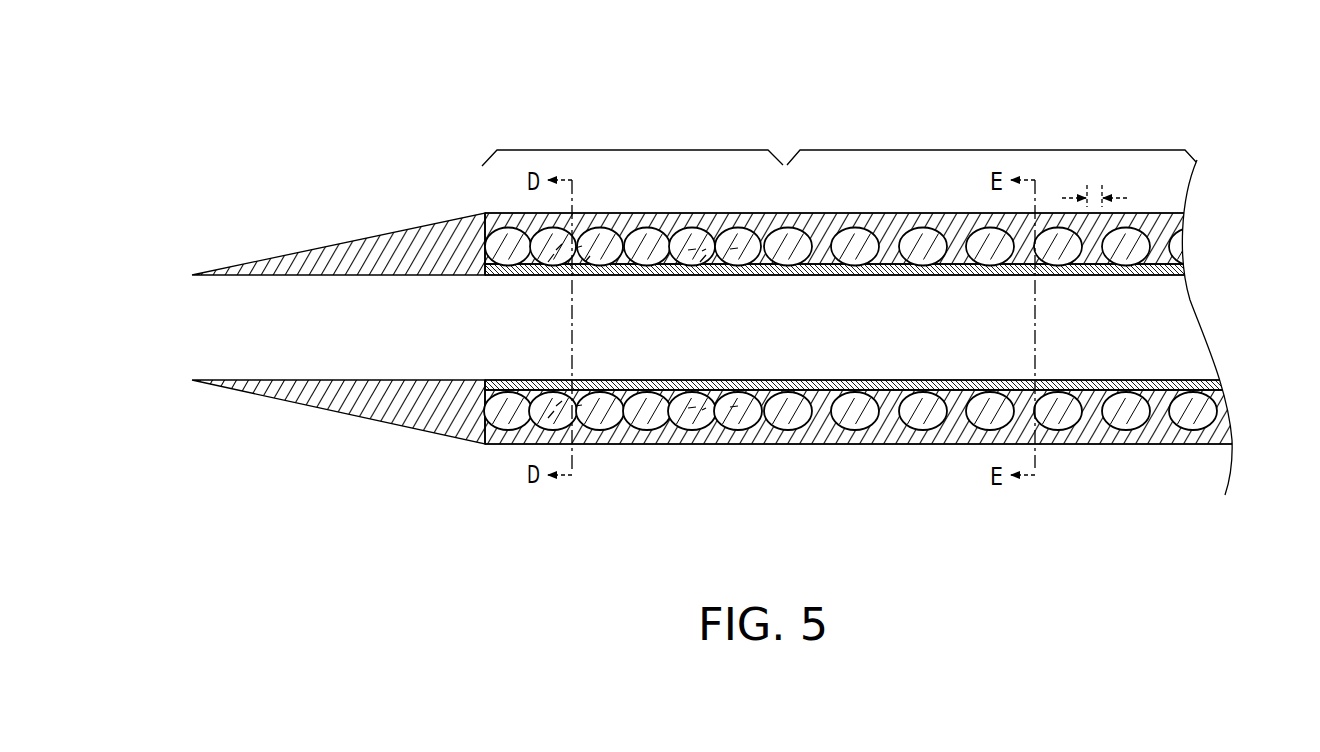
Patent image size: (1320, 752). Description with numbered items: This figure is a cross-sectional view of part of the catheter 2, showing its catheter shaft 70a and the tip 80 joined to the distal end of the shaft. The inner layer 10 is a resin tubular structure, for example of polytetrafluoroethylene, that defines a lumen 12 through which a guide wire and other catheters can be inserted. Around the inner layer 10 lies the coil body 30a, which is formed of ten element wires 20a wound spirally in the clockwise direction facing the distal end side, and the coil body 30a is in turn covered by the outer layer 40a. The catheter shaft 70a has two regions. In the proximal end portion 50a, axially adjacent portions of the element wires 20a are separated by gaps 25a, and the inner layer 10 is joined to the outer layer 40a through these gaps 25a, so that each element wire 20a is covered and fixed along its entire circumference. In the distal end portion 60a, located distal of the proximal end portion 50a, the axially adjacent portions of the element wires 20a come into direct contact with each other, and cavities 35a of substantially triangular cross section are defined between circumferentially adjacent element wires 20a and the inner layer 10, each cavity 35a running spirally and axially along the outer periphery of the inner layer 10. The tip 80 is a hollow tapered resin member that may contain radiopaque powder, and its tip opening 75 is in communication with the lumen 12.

The catheter 2 is at (803, 77).
The inner layer 10 is at (1160, 275).
The lumen 12 is at (1163, 326).
The element wires 20a is at (1178, 247).
The gaps 25a is at (1094, 181).
The coil body 30a is at (1138, 430).
The cavities 35a is at (710, 380).
The outer layer 40a is at (1160, 222).
The proximal end portion 50a is at (932, 150).
The distal end portion 60a is at (618, 150).
The catheter shaft 70a is at (908, 213).
The tip opening 75 is at (218, 353).
The tip 80 is at (358, 257).